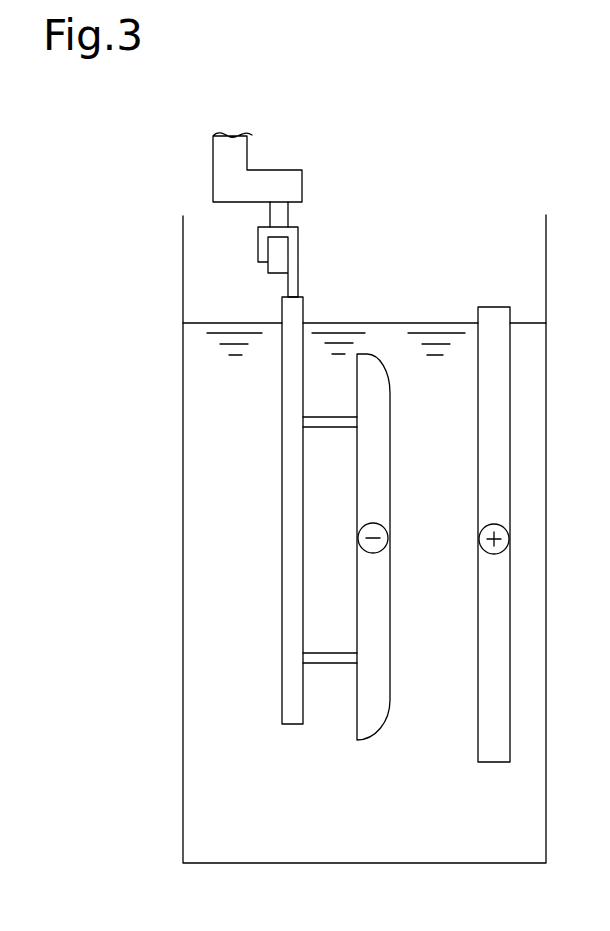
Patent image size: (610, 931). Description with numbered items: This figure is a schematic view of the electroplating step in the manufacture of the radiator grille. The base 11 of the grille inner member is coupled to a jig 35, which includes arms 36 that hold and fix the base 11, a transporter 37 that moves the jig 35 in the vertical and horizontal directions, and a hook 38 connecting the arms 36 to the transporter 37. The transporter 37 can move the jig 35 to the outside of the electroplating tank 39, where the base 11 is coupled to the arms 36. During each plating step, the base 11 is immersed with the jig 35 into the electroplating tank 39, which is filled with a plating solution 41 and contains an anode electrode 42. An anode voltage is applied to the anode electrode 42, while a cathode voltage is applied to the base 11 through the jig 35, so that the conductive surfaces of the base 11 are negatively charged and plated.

The base 11 is at (373, 473).
The jig 35 is at (287, 460).
The arms 36 is at (327, 427).
The transporter 37 is at (267, 177).
The hook 38 is at (290, 265).
The electroplating tank 39 is at (548, 592).
The plating solution 41 is at (388, 333).
The anode electrode 42 is at (483, 677).